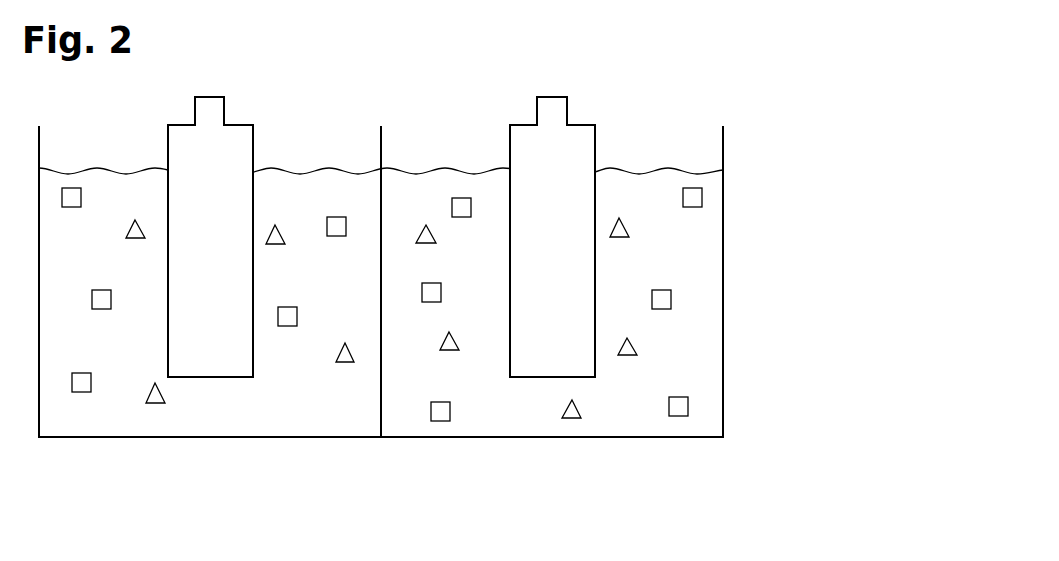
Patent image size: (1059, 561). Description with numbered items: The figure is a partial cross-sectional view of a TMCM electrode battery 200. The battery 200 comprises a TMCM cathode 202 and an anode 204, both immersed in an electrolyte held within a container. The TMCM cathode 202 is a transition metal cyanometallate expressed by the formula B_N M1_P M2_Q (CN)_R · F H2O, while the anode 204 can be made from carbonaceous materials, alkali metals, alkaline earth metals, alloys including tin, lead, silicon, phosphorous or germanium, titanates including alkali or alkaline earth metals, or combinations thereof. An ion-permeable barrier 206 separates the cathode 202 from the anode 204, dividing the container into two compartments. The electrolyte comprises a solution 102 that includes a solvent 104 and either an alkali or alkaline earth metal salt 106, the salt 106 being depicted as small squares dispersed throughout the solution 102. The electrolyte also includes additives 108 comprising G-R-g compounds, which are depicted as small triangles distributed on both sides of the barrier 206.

The battery 200 is at (417, 276).
The TMCM cathode 202 is at (240, 125).
The anode 204 is at (527, 125).
The ion-permeable barrier 206 is at (380, 418).
The solution 102 is at (145, 418).
The solvent 104 is at (330, 408).
The alkali or alkaline earth metal salt 106 is at (702, 199).
The additives 108 is at (574, 420).